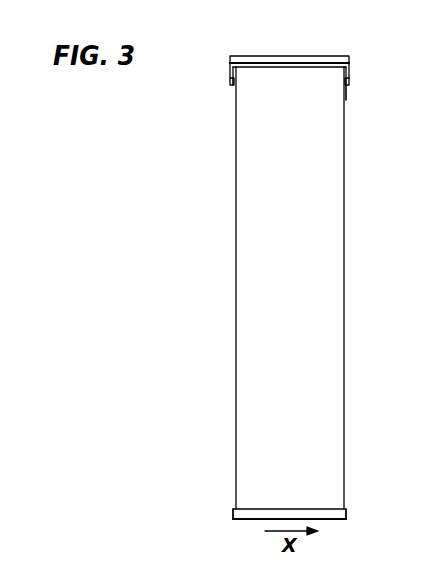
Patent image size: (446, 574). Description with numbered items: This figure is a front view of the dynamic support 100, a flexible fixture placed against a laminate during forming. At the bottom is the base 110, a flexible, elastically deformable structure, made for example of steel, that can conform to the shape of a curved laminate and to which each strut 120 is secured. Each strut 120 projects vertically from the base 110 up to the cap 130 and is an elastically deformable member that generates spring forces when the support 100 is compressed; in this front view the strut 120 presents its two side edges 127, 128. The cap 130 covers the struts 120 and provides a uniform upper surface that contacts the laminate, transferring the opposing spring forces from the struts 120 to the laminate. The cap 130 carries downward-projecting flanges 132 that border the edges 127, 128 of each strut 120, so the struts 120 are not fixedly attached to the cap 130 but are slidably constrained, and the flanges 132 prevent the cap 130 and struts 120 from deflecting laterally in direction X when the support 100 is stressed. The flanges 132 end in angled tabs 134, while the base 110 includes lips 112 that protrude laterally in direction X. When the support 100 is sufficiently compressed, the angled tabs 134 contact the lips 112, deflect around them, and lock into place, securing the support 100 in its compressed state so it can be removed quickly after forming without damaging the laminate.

The dynamic support 100 is at (118, 172).
The base 110 is at (298, 508).
The lips 112 is at (233, 510).
The strut 120 is at (333, 267).
The edge 127 is at (344, 345).
The edge 128 is at (236, 345).
The cap 130 is at (320, 56).
The flanges 132 is at (350, 74).
The angled tabs 134 is at (345, 100).